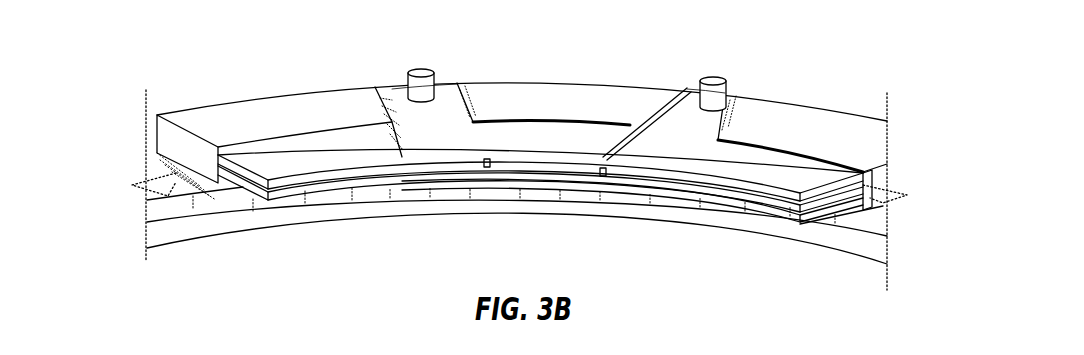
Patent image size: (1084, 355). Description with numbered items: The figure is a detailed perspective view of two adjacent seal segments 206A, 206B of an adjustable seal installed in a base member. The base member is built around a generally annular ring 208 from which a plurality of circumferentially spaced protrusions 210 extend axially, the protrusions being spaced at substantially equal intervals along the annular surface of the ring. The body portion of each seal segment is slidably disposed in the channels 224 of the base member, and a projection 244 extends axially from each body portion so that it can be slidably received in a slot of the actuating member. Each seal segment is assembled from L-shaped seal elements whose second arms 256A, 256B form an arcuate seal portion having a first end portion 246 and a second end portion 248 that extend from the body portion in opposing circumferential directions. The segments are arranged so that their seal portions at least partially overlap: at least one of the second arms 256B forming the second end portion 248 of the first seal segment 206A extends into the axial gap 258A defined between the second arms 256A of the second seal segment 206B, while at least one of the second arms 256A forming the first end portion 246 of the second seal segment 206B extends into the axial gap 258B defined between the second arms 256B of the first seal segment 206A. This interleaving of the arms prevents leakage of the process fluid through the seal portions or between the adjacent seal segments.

The first seal segment 206A is at (389, 69).
The second seal segment 206B is at (696, 77).
The annular ring 208 is at (248, 228).
The protrusions 210 is at (221, 113).
The channels 224 is at (172, 199).
The projection 244 is at (421, 70).
The first end portion 246 is at (279, 153).
The second end portion 248 is at (498, 119).
The second arm 256A is at (332, 153).
The second arm 256B is at (520, 130).
The axial gap 258A is at (603, 172).
The axial gap 258B is at (485, 162).